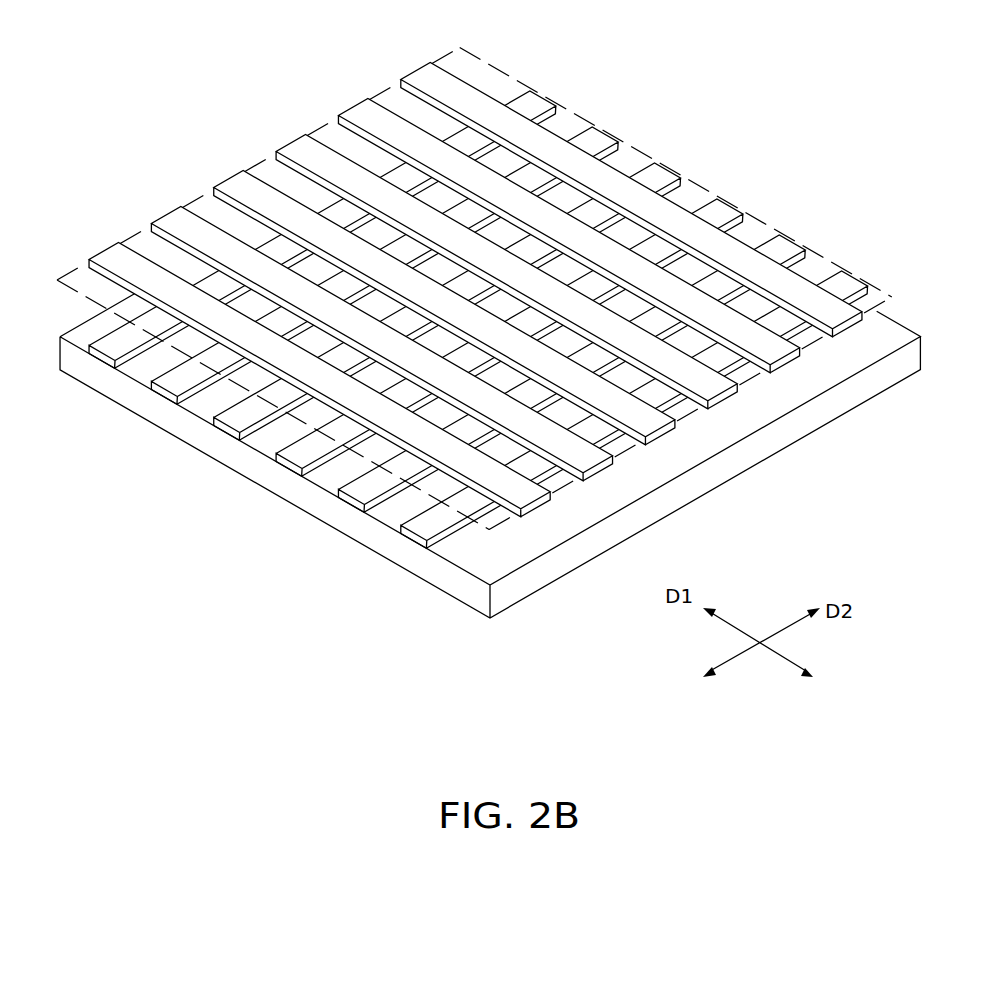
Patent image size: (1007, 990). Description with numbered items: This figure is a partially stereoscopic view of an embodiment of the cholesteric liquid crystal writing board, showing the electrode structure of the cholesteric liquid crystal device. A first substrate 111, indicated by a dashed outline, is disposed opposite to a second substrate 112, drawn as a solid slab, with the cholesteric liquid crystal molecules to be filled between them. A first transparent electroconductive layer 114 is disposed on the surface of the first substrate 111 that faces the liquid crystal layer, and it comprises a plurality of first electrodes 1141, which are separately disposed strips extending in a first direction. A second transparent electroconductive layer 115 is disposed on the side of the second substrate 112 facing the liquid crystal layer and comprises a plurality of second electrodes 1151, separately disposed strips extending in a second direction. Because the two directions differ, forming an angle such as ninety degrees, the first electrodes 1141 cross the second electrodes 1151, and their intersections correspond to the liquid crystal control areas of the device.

The first substrate 111 is at (595, 122).
The second substrate 112 is at (250, 457).
The first transparent electroconductive layer 114 is at (475, 267).
The first electrode 1141 is at (362, 112).
The second transparent electroconductive layer 115 is at (463, 319).
The second electrode 1151 is at (177, 383).